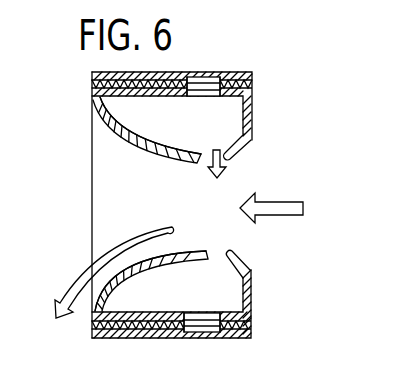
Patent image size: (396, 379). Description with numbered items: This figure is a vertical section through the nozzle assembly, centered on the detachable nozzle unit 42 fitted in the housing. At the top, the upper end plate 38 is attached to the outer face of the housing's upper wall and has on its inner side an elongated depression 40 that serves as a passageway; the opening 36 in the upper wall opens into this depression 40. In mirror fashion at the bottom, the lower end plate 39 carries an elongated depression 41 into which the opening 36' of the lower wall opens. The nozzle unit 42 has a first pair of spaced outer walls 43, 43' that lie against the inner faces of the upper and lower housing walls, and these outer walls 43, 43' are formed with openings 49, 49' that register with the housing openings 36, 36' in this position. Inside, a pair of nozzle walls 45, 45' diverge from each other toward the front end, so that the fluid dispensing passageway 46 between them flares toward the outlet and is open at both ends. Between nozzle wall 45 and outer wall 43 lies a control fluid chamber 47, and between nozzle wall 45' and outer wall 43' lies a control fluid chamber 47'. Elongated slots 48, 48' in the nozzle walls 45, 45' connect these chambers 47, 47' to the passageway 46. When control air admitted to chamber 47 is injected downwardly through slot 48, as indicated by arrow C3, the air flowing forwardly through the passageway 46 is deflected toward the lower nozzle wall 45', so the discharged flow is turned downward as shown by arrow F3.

The opening 36 is at (221, 107).
The opening 36' is at (215, 307).
The upper end plate 38 is at (248, 71).
The lower end plate 39 is at (141, 339).
The elongated depression 40 is at (188, 77).
The elongated depression 41 is at (197, 339).
The detachable nozzle unit 42 is at (87, 201).
The outer wall 43 is at (147, 130).
The outer wall 43' is at (151, 281).
The nozzle wall 45 is at (150, 135).
The nozzle wall 45' is at (129, 300).
The fluid dispensing passageway 46 is at (165, 201).
The control fluid chamber 47 is at (260, 140).
The control fluid chamber 47' is at (260, 263).
The elongated slot 48 is at (235, 171).
The elongated slot 48' is at (225, 233).
The opening 49 is at (180, 108).
The opening 49' is at (183, 304).
The arrow C3 is at (212, 173).
The arrow F3 is at (80, 281).